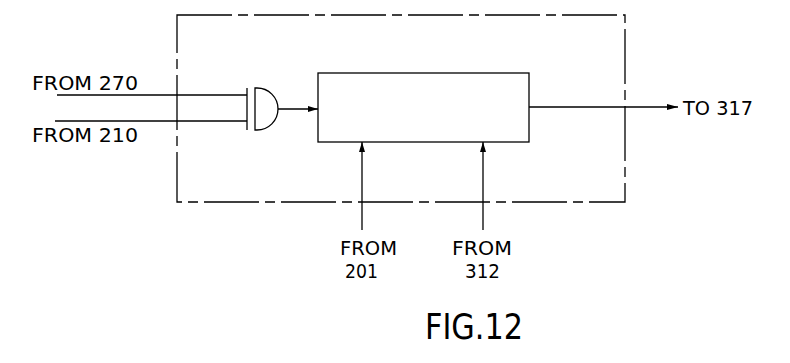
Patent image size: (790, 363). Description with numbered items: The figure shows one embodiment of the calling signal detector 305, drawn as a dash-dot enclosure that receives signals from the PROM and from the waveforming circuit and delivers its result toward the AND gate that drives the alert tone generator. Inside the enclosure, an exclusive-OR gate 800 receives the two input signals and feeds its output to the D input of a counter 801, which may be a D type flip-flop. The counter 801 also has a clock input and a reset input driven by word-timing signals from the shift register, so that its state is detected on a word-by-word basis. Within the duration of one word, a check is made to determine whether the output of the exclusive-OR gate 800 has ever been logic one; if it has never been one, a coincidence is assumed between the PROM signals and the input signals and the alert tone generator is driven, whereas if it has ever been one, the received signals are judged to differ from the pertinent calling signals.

The calling signal detector 305 is at (625, 48).
The exclusive-OR gate 800 is at (275, 91).
The counter 801 is at (443, 73).